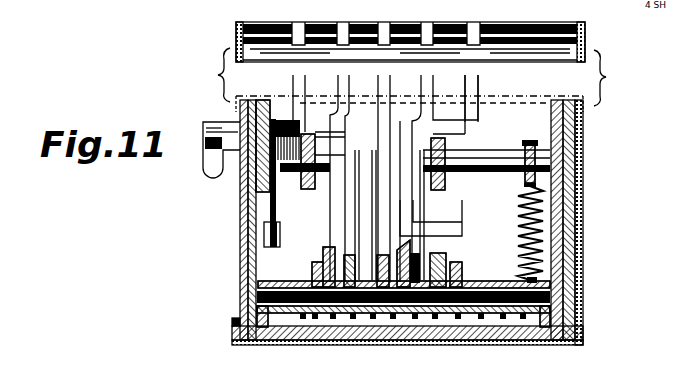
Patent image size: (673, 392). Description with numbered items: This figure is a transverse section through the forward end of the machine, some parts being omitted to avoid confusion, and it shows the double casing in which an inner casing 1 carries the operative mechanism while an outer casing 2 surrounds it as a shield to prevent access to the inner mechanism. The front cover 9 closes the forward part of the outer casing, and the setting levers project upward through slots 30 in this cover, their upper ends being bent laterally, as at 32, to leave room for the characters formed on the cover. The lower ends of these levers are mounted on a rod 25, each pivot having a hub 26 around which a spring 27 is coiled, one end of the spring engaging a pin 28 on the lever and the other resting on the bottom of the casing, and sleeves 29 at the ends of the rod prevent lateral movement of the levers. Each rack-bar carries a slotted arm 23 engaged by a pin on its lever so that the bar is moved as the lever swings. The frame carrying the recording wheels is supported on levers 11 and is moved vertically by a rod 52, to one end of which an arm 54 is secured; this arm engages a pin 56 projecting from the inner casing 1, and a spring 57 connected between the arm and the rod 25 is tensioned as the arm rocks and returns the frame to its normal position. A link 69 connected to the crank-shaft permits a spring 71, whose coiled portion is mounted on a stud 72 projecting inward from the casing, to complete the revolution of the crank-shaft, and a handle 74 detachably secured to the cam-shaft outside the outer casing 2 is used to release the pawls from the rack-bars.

The inner casing 1 is at (240, 184).
The outer casing 2 is at (240, 222).
The front cover 9 is at (414, 56).
The levers 11 is at (310, 190).
The slotted arm 23 is at (343, 212).
The rod 25 is at (583, 284).
The hub 26 is at (320, 316).
The spring 27 is at (466, 316).
The pin 28 is at (311, 272).
The sleeve 29 is at (520, 276).
The slot 30 is at (298, 26).
The laterally bent portion 32 is at (322, 136).
The rod 52 is at (514, 150).
The arm 54 is at (533, 145).
The pin 56 is at (516, 196).
The spring 57 is at (519, 236).
The link 69 is at (270, 248).
The spring 71 is at (300, 190).
The stud 72 is at (282, 172).
The handle 74 is at (203, 163).